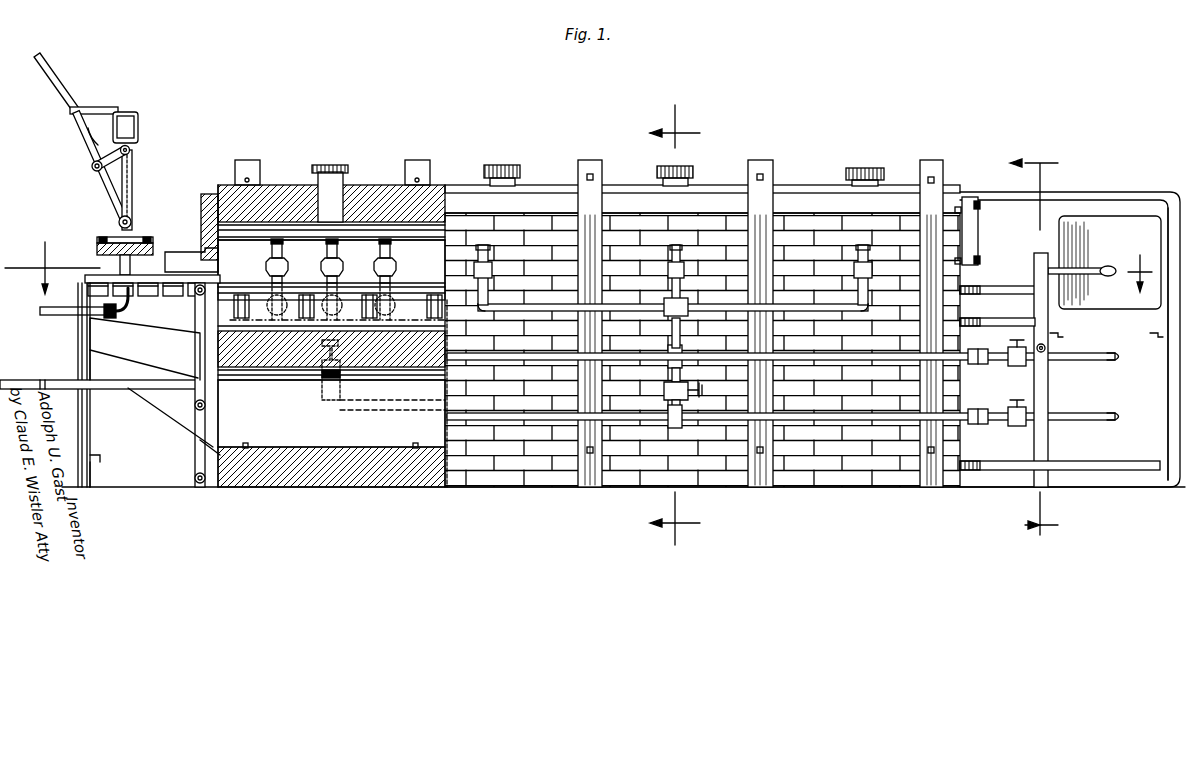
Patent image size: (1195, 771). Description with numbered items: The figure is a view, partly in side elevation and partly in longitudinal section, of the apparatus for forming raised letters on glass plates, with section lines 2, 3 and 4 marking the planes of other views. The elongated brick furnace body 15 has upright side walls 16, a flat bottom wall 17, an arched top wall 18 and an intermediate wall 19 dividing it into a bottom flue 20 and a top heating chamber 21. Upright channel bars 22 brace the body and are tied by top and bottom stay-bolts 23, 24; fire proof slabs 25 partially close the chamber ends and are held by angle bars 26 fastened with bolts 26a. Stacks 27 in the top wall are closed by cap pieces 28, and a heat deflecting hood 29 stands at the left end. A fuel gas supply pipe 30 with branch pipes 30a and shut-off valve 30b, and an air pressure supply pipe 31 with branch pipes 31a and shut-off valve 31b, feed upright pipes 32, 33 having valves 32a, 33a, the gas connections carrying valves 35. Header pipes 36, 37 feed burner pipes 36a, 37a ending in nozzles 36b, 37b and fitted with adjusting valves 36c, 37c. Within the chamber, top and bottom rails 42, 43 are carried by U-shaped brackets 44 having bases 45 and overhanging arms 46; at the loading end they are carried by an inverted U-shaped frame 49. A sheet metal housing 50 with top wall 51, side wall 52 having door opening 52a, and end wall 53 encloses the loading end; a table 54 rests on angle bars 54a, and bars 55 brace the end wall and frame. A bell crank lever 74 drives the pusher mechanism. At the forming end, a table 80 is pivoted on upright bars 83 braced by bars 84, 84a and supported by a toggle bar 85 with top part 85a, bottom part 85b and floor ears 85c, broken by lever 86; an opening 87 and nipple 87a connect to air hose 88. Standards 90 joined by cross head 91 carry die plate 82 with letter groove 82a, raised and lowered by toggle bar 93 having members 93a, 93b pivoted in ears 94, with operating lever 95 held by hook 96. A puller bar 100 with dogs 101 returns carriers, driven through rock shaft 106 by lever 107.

The section line 2- 2 is at (675, 327).
The section line 3- 3 is at (1034, 345).
The section line 4- 4 is at (593, 260).
The furnace body 15 is at (785, 185).
The upright side walls 16 is at (539, 380).
The flat bottom wall 17 is at (272, 470).
The transversely arched top wall 18 is at (365, 190).
The intermediate wall 19 is at (453, 345).
The bottom flue 20 is at (331, 389).
The heating compartment or chamber 21 is at (331, 270).
The upright channel bars 22 is at (420, 165).
The top transverse stay-bolts 23 is at (421, 181).
The bottom transverse stay-bolts 24 is at (413, 443).
The fire proof slabs 25 is at (979, 222).
The angle bars 26 is at (977, 200).
The bolts 26a is at (955, 210).
The stacks 27 is at (345, 178).
The removable cap pieces 28 is at (328, 168).
The heat deflecting hood 29 is at (185, 250).
The fuel gas supply pipe 30 is at (1088, 361).
The branch pipes 30a is at (828, 353).
The shut-off valve 30b is at (1010, 360).
The air pressure supply pipe 31 is at (1080, 413).
The branch pipes 31a is at (862, 410).
The shut-off valve 31b is at (1010, 425).
The upright pipe 32 is at (690, 402).
The shut-off valve 32a is at (666, 390).
The upright pipe 33 is at (322, 398).
The shut-off valve 33a is at (343, 388).
The shut-off valves 35 is at (325, 340).
The header pipe 36 is at (600, 304).
The burner pipes 36a is at (480, 290).
The nozzles 36b is at (488, 248).
The adjusting valves 36c is at (492, 268).
The header pipe 37 is at (345, 292).
The burner pipes 37a is at (322, 258).
The nozzles 37b is at (336, 246).
The adjusting valves 37c is at (270, 268).
The top rails 42 is at (425, 286).
The bottom rails 43 is at (1005, 318).
The U-shaped brackets 44 is at (427, 303).
The transverse base 45 is at (380, 345).
The upright overhanging arms 46 is at (300, 296).
The inverted U-shaped frame 49 is at (1040, 253).
The sheet metal housing 50 is at (1113, 188).
The top wall 51 is at (1065, 195).
The side wall 52 is at (1080, 205).
The door opening 52a is at (1062, 238).
The end wall 53 is at (1170, 385).
The table 54 is at (1152, 333).
The angle bars 54a is at (1156, 332).
The bars 55 is at (1080, 468).
The bell crank lever 74 is at (1100, 270).
The table 80 is at (62, 275).
The die plate 82 is at (97, 245).
The groove 82a is at (131, 218).
The upright bars 83 is at (78, 333).
The top brace bars 84 is at (150, 365).
The bottom brace bars 84a is at (160, 410).
The upright toggle bar 85 is at (172, 372).
The top part of toggle bar 85a is at (200, 315).
The bottom part of toggle bar 85b is at (195, 445).
The ears 85c is at (195, 476).
The lever 86 is at (58, 380).
The opening 87 is at (135, 295).
The nipple 87a is at (145, 320).
The hose 88 is at (45, 307).
The upright standards 90 is at (133, 162).
The cross head 91 is at (137, 130).
The toggle jointed bar 93 is at (92, 166).
The bottom member 93a is at (104, 190).
The top member 93b is at (80, 135).
The ears 94 is at (131, 150).
The operating lever 95 is at (60, 88).
The hook 96 is at (90, 108).
The puller bar 100 is at (440, 335).
The triangular dogs 101 is at (230, 360).
The rock shaft 106 is at (1046, 347).
The lever 107 is at (1040, 298).